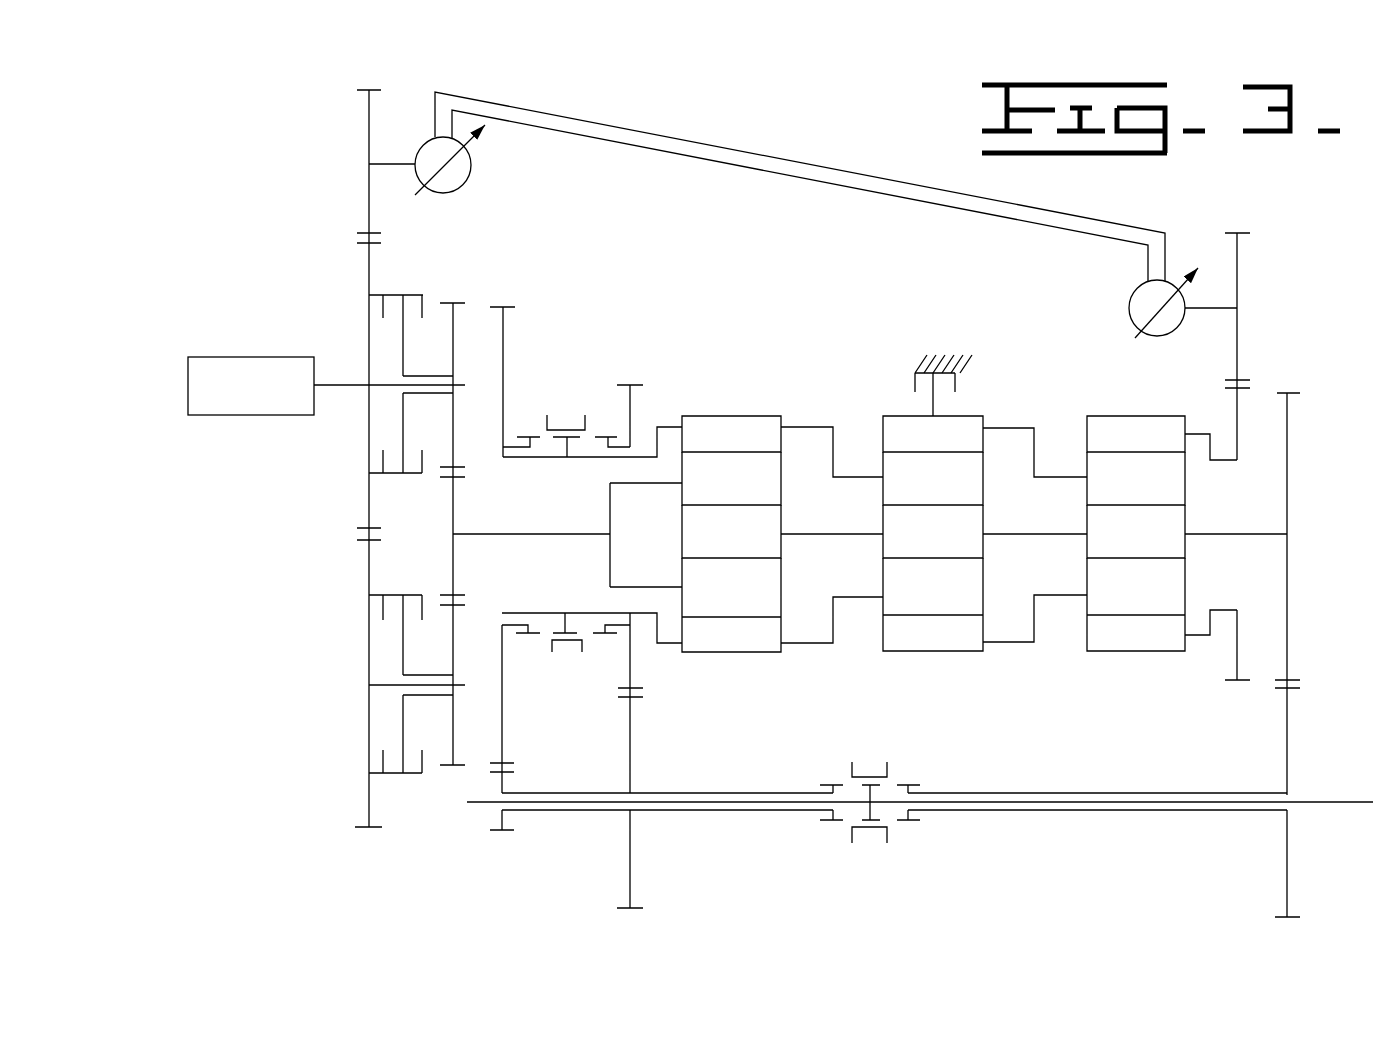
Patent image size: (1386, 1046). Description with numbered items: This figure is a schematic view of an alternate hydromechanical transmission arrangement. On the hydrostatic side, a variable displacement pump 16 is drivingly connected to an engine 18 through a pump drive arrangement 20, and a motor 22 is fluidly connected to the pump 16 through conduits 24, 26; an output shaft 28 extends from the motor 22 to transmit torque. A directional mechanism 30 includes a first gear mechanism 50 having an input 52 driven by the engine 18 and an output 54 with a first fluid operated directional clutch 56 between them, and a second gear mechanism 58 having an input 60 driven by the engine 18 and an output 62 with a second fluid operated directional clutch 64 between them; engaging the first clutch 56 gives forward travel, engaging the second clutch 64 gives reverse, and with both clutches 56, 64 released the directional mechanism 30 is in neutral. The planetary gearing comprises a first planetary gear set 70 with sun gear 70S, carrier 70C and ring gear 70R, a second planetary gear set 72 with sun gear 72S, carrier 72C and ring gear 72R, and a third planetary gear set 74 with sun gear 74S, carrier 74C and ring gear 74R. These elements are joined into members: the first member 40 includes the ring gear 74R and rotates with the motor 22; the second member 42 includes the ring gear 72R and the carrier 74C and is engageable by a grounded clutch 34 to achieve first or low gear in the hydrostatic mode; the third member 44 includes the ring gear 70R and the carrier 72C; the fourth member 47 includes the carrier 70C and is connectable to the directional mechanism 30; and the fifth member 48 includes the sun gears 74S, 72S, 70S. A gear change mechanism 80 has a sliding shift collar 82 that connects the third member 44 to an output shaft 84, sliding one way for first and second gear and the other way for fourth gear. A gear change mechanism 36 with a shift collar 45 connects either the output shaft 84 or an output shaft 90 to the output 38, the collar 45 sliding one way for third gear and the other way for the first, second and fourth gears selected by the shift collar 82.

The variable displacement pump 16 is at (472, 160).
The engine 18 is at (257, 418).
The pump drive arrangement 20 is at (335, 152).
The motor 22 is at (1133, 290).
The conduit 24 is at (757, 168).
The conduit 26 is at (773, 157).
The output shaft 28 is at (1207, 300).
The directional mechanism 30 is at (320, 612).
The grounded clutch 34 is at (914, 376).
The gear change mechanism 36 is at (870, 761).
The output 38 is at (1335, 800).
The first member 40 is at (1220, 460).
The second member 42 is at (928, 408).
The third member 44 is at (657, 425).
The shift collar 45 is at (865, 762).
The fourth member 47 is at (545, 533).
The fifth member 48 is at (1282, 535).
The first gear mechanism 50 is at (435, 343).
The input 52 is at (368, 293).
The output 54 is at (454, 352).
The first fluid operated directional clutch 56 is at (428, 302).
The second gear mechanism 58 is at (378, 713).
The input 60 is at (368, 593).
The output 62 is at (453, 620).
The second fluid operated directional clutch 64 is at (408, 595).
The first planetary gear set 70 is at (782, 468).
The ring gear 70R is at (748, 414).
The carrier 70C is at (773, 465).
The sun gear 70S is at (777, 521).
The second planetary gear set 72 is at (985, 490).
The ring gear 72R is at (975, 420).
The carrier 72C is at (975, 470).
The sun gear 72S is at (985, 528).
The third planetary gear set 74 is at (1174, 519).
The ring gear 74R is at (1120, 652).
The carrier 74C is at (1178, 598).
The sun gear 74S is at (1178, 525).
The gear change mechanism 80 is at (586, 703).
The sliding shift collar 82 is at (553, 644).
The output shaft 84 is at (680, 793).
The output shaft 90 is at (1018, 793).